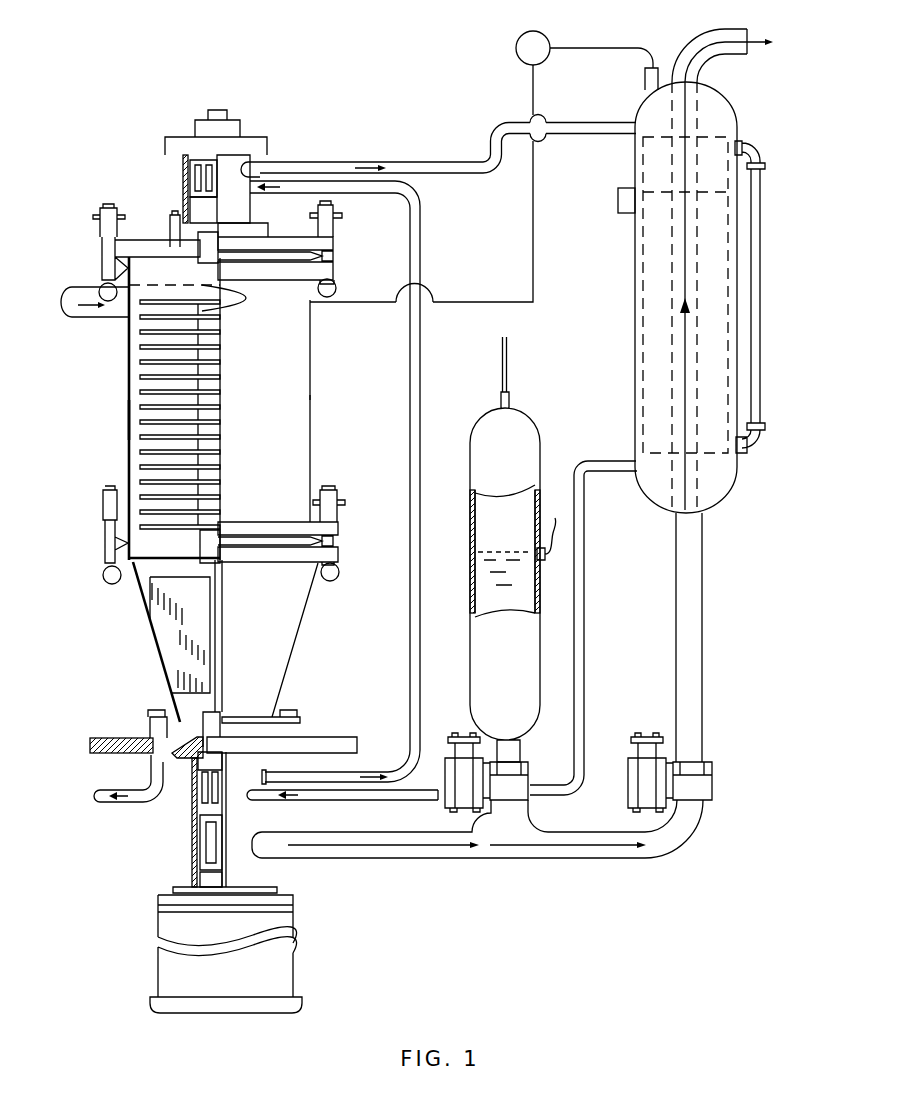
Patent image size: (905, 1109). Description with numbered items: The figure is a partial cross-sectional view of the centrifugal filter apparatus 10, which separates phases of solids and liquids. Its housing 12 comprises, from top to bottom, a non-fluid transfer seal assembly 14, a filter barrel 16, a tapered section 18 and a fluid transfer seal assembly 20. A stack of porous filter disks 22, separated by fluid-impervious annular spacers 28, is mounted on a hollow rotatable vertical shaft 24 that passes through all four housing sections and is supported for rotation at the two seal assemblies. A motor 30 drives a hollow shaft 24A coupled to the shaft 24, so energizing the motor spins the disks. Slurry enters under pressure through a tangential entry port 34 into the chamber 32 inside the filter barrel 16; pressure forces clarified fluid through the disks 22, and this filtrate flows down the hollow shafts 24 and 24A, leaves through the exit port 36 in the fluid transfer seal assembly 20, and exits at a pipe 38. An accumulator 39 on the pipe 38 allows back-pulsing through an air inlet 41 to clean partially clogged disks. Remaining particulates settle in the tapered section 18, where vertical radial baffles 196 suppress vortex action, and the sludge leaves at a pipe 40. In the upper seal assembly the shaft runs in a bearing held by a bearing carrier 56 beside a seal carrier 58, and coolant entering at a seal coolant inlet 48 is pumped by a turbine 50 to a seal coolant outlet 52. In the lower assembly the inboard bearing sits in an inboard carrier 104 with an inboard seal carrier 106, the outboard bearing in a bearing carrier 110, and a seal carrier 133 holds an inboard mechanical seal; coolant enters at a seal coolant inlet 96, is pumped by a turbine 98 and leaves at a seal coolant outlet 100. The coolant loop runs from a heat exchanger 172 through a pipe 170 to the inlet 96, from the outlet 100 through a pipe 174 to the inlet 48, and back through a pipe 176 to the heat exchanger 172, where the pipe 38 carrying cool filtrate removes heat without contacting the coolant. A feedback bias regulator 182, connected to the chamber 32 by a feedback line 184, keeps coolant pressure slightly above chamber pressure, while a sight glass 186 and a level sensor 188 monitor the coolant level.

The centrifugal filter apparatus 10 is at (127, 348).
The housing 12 is at (312, 397).
The non-fluid transfer seal assembly 14 is at (258, 160).
The filter barrel 16 is at (310, 315).
The tapered section 18 is at (290, 645).
The fluid transfer seal assembly 20 is at (262, 826).
The porous filter disks 22 is at (147, 452).
The hollow rotatable vertical shaft 24 is at (215, 612).
The hollow shaft 24A is at (222, 828).
The annular spacers 28 is at (147, 385).
The motor 30 is at (293, 932).
The pressure vessel or chamber 32 is at (128, 418).
The entry port 34 is at (92, 287).
The exit port 36 is at (210, 852).
The pipe 38 is at (703, 625).
The accumulator 39 is at (537, 453).
The pipe 40 is at (105, 790).
The air inlet 41 is at (509, 357).
The seal coolant inlet 48 is at (256, 195).
The turbine 50 is at (190, 180).
The seal coolant outlet 52 is at (258, 163).
The bearing carrier 56 is at (185, 157).
The seal carrier 58 is at (197, 210).
The seal coolant inlet 96 is at (300, 805).
The turbine 98 is at (197, 790).
The seal coolant outlet 100 is at (267, 770).
The inboard carrier 104 is at (200, 825).
The inboard seal carrier 106 is at (197, 812).
The bearing carrier 110 is at (205, 875).
The seal carrier 133 is at (192, 765).
The pipe 170 is at (585, 637).
The heat exchanger 172 is at (645, 250).
The pipe 174 is at (420, 352).
The pipe 176 is at (497, 128).
The feedback bias regulator 182 is at (516, 42).
The feedback line 184 is at (498, 300).
The sight glass 186 is at (762, 342).
The level sensor 188 is at (618, 193).
The baffles 196 is at (170, 638).